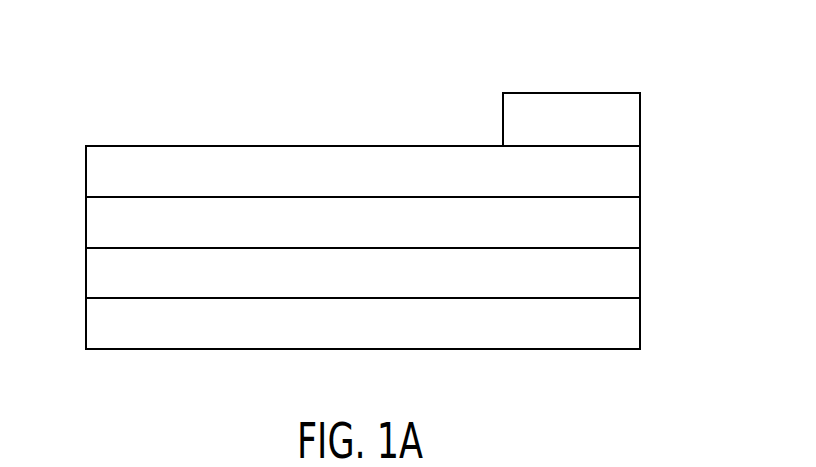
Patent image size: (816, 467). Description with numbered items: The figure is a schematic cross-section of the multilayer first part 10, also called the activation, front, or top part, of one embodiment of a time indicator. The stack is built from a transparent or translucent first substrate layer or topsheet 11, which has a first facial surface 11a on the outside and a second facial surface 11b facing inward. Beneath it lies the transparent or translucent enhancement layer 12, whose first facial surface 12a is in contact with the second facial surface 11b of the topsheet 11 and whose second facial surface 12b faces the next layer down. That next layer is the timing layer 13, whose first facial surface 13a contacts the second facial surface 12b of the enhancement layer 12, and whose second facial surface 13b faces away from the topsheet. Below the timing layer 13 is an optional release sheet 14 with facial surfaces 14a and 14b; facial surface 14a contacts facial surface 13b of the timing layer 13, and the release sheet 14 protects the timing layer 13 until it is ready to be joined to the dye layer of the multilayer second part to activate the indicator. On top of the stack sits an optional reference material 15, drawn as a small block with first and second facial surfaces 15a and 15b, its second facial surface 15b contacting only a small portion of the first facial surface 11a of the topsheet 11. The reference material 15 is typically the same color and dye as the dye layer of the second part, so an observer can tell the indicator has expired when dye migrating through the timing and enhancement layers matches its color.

The first part 10 is at (611, 31).
The first substrate layer 11 is at (86, 173).
The first facial surface of topsheet 11a is at (595, 150).
The second facial surface of topsheet 11b is at (608, 193).
The enhancement layer 12 is at (86, 223).
The first facial surface of enhancement layer 12a is at (595, 201).
The second facial surface of enhancement layer 12b is at (608, 244).
The timing layer 13 is at (86, 275).
The first facial surface of timing layer 13a is at (595, 252).
The second facial surface of timing layer 13b is at (608, 295).
The release sheet 14 is at (86, 325).
The facial surface of release sheet 14a is at (595, 302).
The facial surface of release sheet 14b is at (608, 346).
The reference material 15 is at (503, 118).
The first facial surface of reference material 15a is at (535, 99).
The second facial surface of reference material 15b is at (572, 141).